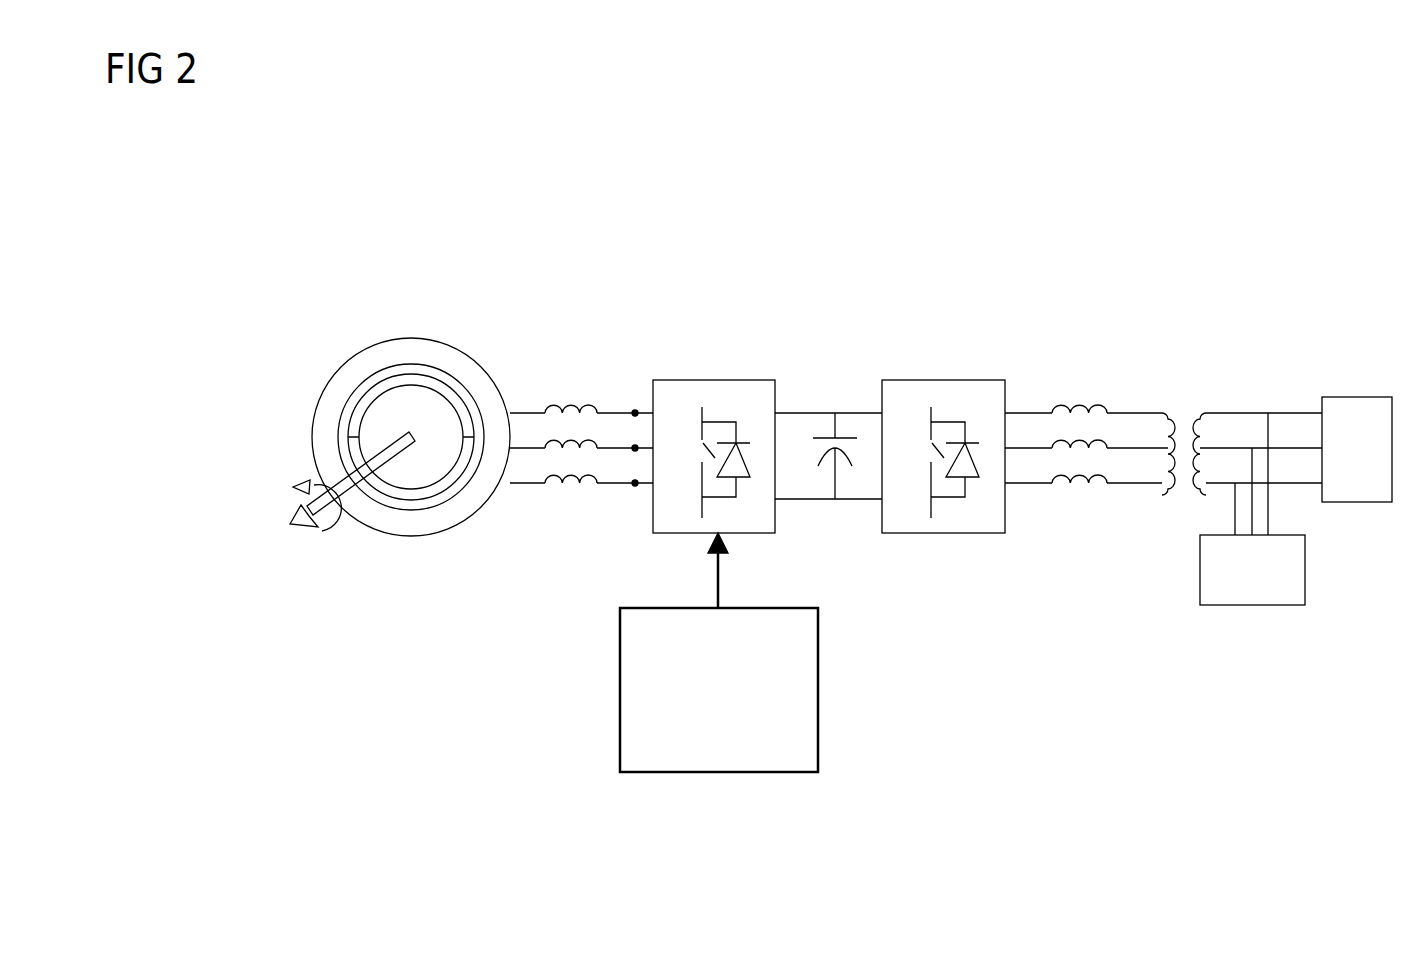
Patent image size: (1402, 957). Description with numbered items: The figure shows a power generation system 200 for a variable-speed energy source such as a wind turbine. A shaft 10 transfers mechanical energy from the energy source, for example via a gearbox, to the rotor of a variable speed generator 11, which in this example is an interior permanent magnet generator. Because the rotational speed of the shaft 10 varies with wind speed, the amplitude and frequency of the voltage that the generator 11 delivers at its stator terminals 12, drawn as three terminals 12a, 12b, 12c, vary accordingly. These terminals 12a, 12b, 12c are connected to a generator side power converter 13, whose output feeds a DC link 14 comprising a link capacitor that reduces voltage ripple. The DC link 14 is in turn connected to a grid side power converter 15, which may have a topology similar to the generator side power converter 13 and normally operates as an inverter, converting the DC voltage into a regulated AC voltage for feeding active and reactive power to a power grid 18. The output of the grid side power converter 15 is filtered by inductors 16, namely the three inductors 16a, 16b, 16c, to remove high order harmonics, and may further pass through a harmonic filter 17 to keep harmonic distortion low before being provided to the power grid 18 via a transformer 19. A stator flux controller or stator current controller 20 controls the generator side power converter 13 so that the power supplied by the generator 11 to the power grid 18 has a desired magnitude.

The power generation system 200 is at (1260, 195).
The shaft 10 is at (297, 532).
The variable speed generator 11 is at (345, 363).
The stator terminals 12 is at (635, 482).
The stator terminal 12a is at (581, 410).
The stator terminal 12b is at (581, 445).
The stator terminal 12c is at (581, 480).
The generator side power converter 13 is at (727, 395).
The DC link 14 is at (838, 412).
The grid side power converter 15 is at (953, 398).
The inductors 16 is at (1090, 475).
The inductor 16a is at (1083, 409).
The inductor 16b is at (1086, 444).
The inductor 16c is at (1083, 479).
The harmonic filter 17 is at (1236, 588).
The power grid 18 is at (1358, 413).
The transformer 19 is at (1182, 423).
The stator flux controller or stator current controller 20 is at (750, 773).